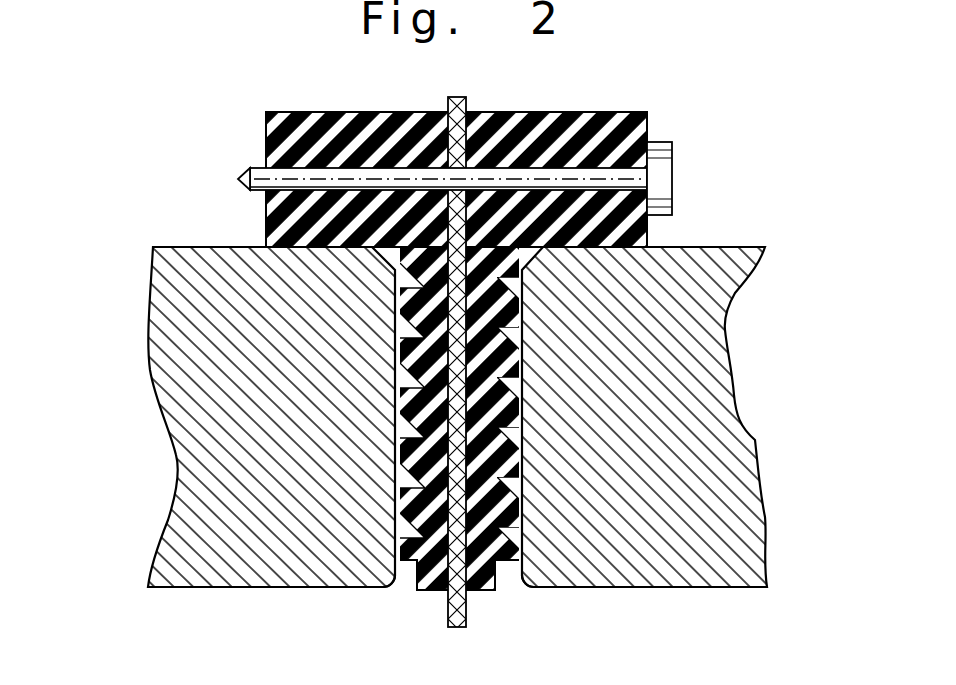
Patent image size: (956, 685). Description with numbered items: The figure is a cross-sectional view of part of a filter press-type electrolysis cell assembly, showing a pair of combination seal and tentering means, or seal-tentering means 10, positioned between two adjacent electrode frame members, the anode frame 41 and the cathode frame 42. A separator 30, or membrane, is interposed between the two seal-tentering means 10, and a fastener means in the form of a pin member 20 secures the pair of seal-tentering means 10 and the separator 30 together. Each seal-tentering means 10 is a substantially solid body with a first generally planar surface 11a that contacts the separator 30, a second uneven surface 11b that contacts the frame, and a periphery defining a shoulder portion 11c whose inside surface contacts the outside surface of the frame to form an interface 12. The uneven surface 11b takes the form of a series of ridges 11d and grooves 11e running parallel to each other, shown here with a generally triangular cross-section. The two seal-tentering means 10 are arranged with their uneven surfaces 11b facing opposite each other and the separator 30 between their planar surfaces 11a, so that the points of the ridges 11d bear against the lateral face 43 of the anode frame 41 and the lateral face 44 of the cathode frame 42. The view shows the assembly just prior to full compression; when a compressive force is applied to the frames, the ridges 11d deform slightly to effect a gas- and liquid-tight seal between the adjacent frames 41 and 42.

The seal-tentering means 10 is at (318, 88).
The first generally planar surface 11a is at (437, 578).
The second uneven surface 11b is at (350, 442).
The shoulder portion 11c is at (267, 213).
The ridges 11d is at (397, 343).
The grooves 11e is at (397, 373).
The interface 12 is at (293, 250).
The pin member 20 is at (672, 172).
The separator 30 is at (468, 98).
The anode frame 41 is at (172, 247).
The cathode frame 42 is at (747, 247).
The lateral face 43 is at (397, 549).
The lateral face 44 is at (520, 549).